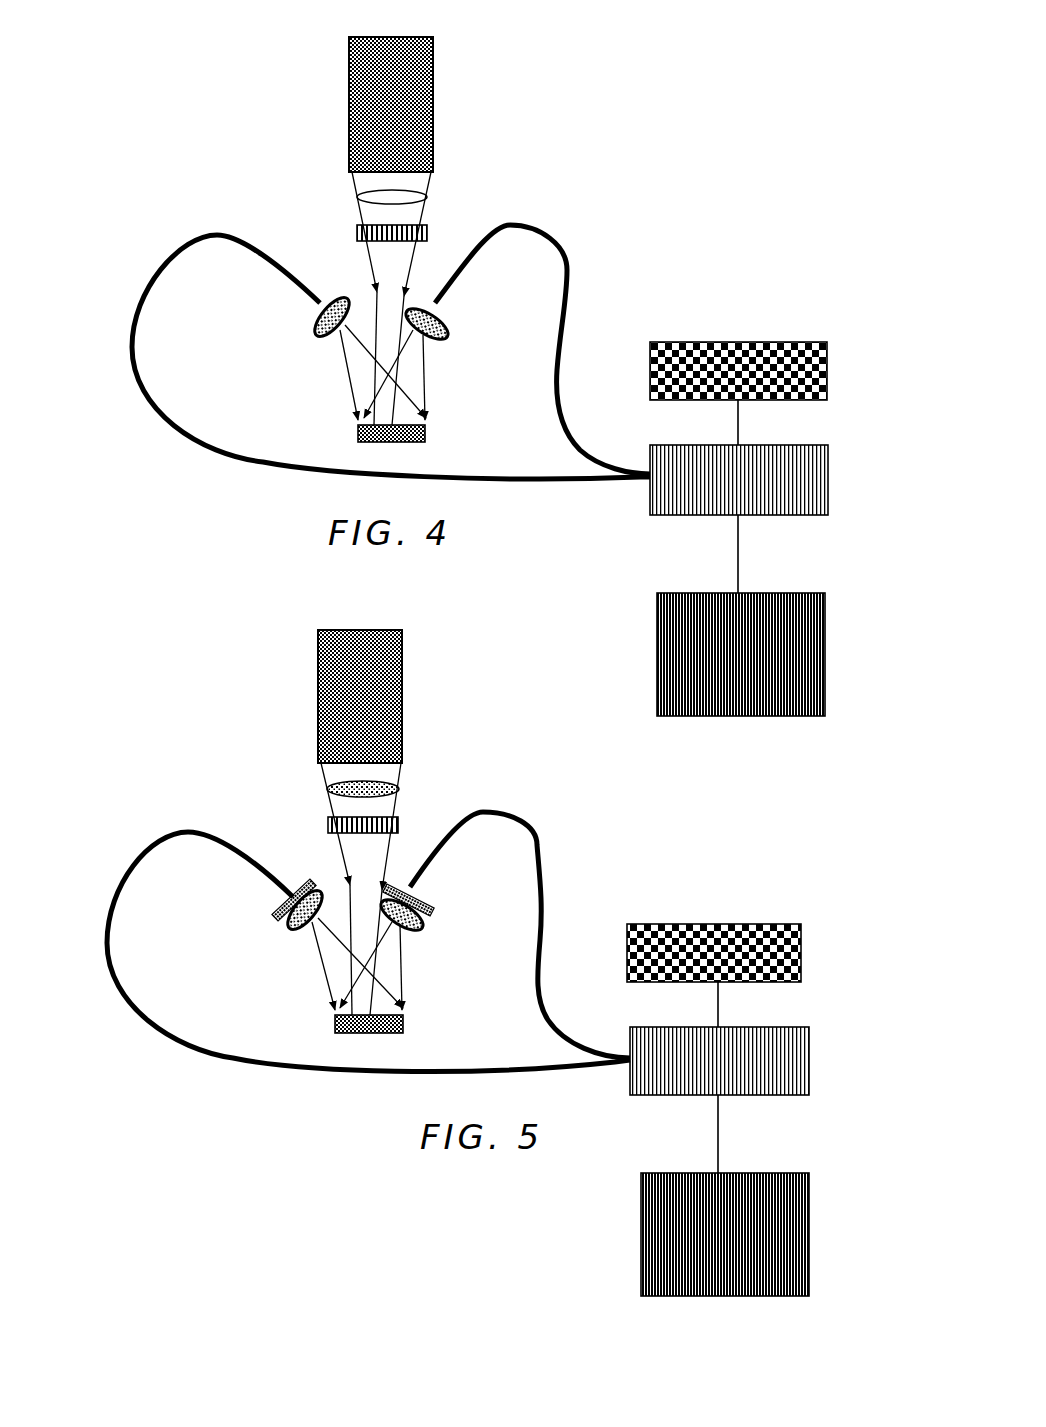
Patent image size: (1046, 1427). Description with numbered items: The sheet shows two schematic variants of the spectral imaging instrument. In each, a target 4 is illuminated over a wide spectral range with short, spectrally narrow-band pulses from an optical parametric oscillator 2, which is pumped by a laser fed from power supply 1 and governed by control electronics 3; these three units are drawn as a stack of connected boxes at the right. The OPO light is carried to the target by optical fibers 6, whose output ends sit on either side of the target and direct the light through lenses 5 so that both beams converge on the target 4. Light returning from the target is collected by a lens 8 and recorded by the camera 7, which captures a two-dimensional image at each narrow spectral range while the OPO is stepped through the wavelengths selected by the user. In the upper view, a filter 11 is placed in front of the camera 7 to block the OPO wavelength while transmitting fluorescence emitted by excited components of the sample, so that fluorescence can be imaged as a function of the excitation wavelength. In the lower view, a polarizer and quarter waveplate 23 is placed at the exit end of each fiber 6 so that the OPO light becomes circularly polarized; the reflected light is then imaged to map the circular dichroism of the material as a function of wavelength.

In FIG. 4, the power supply 1 is at (827, 653).
In FIG. 5, the power supply 1 is at (809, 1231).
In FIG. 4, the optical parametric oscillator 2 is at (827, 479).
In FIG. 5, the optical parametric oscillator 2 is at (809, 1058).
In FIG. 4, the control electronics 3 is at (827, 373).
In FIG. 5, the control electronics 3 is at (801, 951).
In FIG. 4, the target 4 is at (425, 430).
In FIG. 5, the target 4 is at (403, 1018).
In FIG. 4, the lens 5 is at (318, 325).
In FIG. 5, the lens 5 is at (297, 923).
In FIG. 4, the optical fiber 6 is at (145, 300).
In FIG. 5, the optical fiber 6 is at (120, 897).
In FIG. 4, the camera 7 is at (432, 107).
In FIG. 5, the camera 7 is at (402, 697).
In FIG. 4, the lens 8 is at (357, 200).
In FIG. 5, the lens 8 is at (327, 797).
In FIG. 4, the filter 11 is at (423, 230).
In FIG. 5, the filter 11 is at (398, 822).
In FIG. 5, the polarizer and quarter waveplate 23 is at (278, 916).